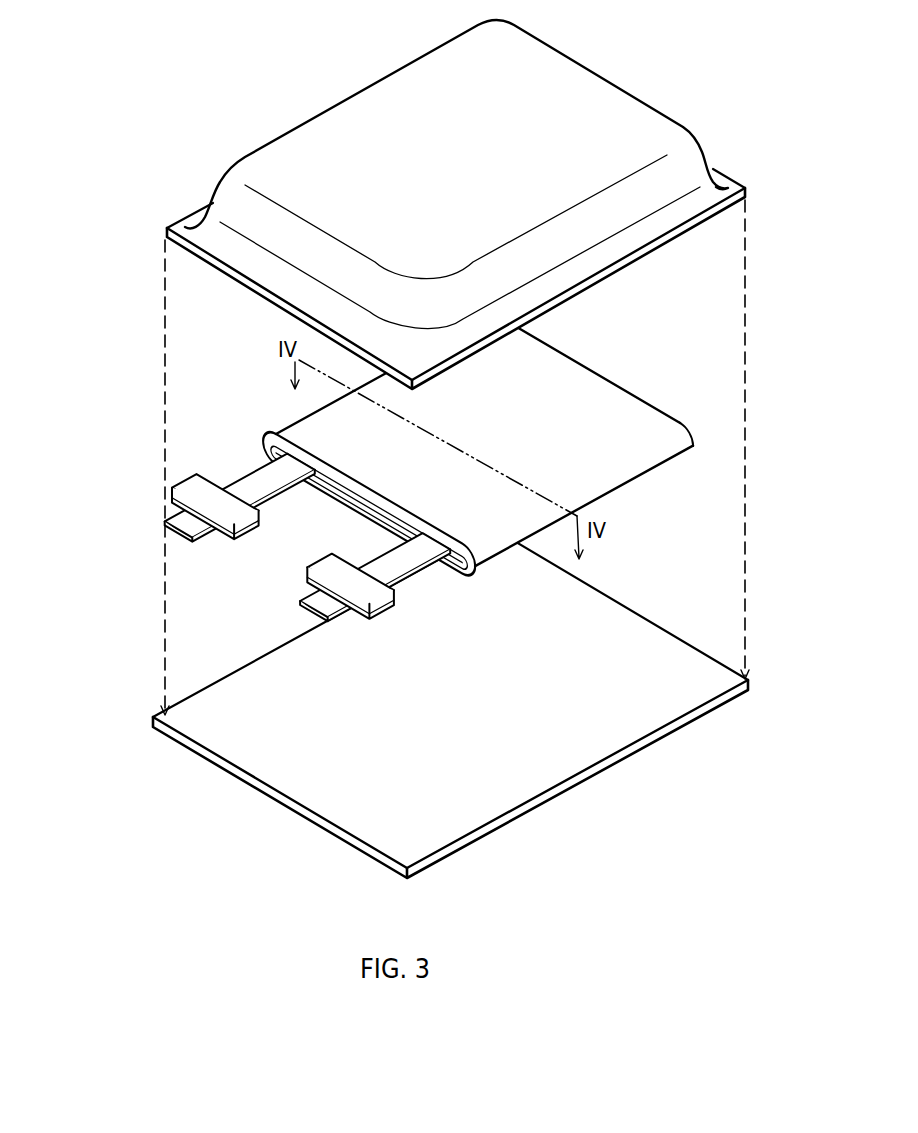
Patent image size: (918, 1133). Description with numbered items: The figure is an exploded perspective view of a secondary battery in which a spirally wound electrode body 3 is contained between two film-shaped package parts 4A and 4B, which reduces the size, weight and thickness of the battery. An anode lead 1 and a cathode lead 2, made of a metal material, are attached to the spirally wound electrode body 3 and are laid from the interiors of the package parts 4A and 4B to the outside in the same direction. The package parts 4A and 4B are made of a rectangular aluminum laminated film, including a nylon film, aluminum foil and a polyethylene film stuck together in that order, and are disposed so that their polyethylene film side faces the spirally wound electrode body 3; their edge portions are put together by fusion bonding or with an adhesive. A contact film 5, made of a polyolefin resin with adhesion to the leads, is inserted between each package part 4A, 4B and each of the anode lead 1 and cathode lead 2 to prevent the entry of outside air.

The anode lead 1 is at (318, 591).
The cathode lead 2 is at (162, 514).
The spirally wound electrode body 3 is at (551, 362).
The package part 4A is at (587, 89).
The package part 4B is at (639, 627).
The contact film 5 is at (333, 556).